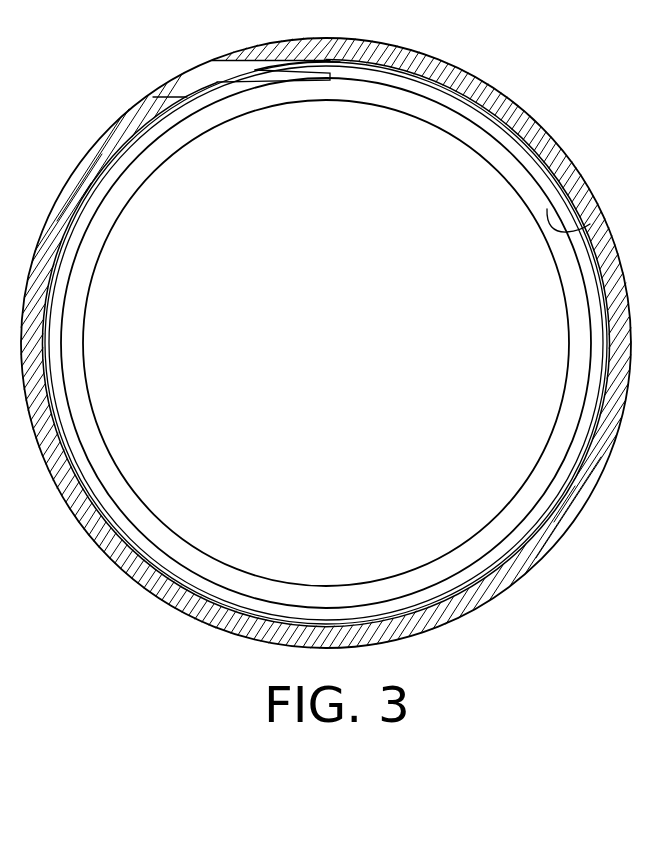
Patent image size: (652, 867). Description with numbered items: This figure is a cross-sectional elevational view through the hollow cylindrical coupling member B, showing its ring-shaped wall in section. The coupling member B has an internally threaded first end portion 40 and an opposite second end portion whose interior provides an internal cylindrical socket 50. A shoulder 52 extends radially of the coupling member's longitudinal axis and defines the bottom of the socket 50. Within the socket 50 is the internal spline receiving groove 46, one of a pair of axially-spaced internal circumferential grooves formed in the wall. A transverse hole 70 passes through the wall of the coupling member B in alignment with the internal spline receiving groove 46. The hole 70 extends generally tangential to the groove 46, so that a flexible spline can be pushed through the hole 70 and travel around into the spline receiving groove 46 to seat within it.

The first end portion 40 is at (490, 170).
The internal spline receiving groove 46 is at (433, 97).
The internal cylindrical socket 50 is at (580, 228).
The shoulder 52 is at (525, 185).
The transverse hole 70 is at (204, 73).
The coupling member B is at (100, 116).